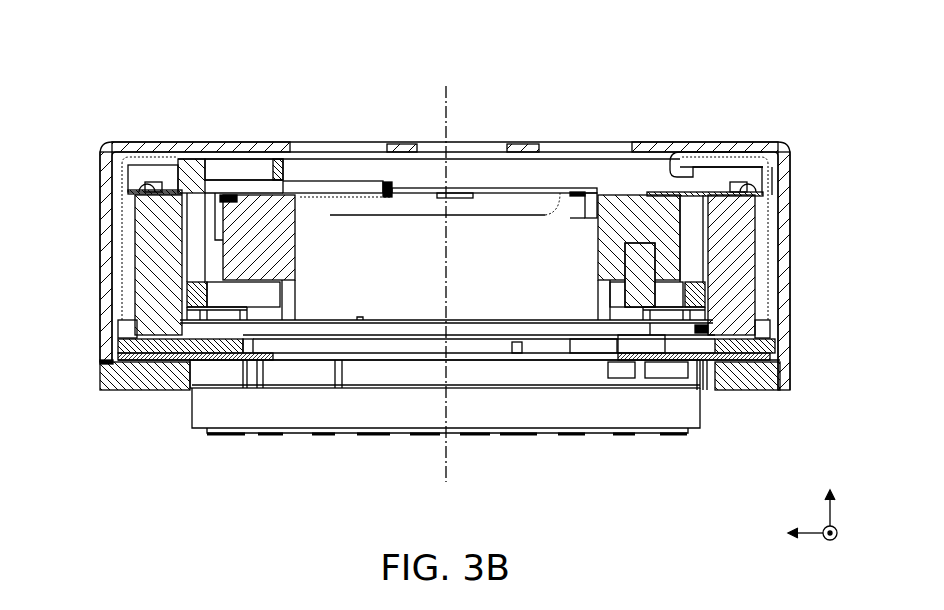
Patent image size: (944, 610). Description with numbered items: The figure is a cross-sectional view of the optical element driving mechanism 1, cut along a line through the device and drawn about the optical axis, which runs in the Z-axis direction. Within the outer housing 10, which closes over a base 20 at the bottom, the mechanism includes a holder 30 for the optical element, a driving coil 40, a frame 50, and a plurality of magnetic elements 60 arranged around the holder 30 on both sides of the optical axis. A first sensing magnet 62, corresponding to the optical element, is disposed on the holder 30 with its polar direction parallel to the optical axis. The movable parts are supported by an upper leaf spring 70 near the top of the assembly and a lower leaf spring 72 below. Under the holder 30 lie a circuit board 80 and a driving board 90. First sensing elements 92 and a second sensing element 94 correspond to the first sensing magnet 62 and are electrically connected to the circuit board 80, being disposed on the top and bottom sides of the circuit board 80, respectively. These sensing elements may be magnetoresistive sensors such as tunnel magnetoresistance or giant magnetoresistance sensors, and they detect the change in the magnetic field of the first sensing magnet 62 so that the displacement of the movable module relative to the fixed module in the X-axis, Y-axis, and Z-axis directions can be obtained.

The optical element driving mechanism 1 is at (72, 56).
The housing 10 is at (108, 186).
The base 20 is at (152, 388).
The holder 30 is at (254, 222).
The driving coil 40 is at (207, 295).
The frame 50 is at (133, 228).
The magnetic elements 60 is at (190, 284).
The first sensing magnet 62 is at (687, 243).
The upper leaf spring 70 is at (497, 188).
The lower leaf spring 72 is at (553, 325).
The circuit board 80 is at (122, 357).
The driving board 90 is at (120, 345).
The first sensing elements 92 is at (620, 370).
The second sensing element 94 is at (704, 365).